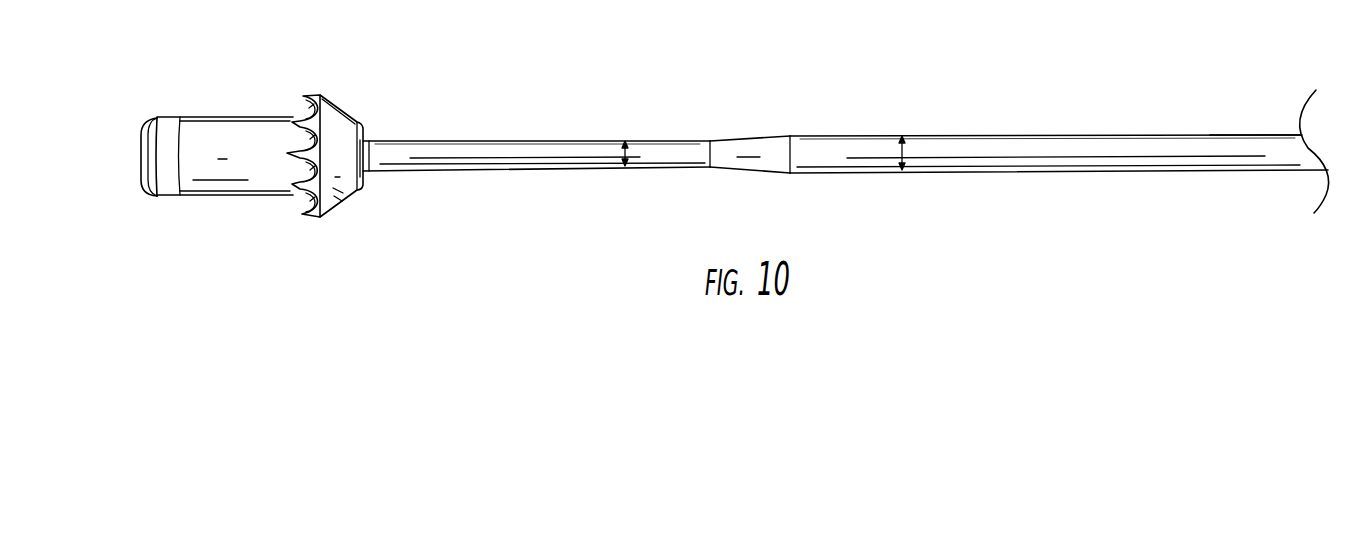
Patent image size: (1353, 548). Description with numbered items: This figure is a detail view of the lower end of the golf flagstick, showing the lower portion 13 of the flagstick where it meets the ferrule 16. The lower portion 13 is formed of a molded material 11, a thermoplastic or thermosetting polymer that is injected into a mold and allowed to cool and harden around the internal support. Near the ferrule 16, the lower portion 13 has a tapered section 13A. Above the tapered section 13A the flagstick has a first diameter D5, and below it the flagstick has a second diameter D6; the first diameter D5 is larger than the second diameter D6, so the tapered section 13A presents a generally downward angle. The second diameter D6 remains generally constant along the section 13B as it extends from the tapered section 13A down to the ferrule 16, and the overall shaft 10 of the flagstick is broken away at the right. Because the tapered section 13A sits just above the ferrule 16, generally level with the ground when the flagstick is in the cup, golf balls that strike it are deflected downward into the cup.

The elongated shaft 10 is at (846, 152).
The molten material 11 is at (167, 138).
The lower portion 13 is at (1202, 136).
The tapered section 13A is at (757, 142).
The distal shaft section 13B is at (544, 141).
The ferrule 16 is at (260, 180).
The first diameter D5 is at (906, 151).
The second diameter D6 is at (629, 157).